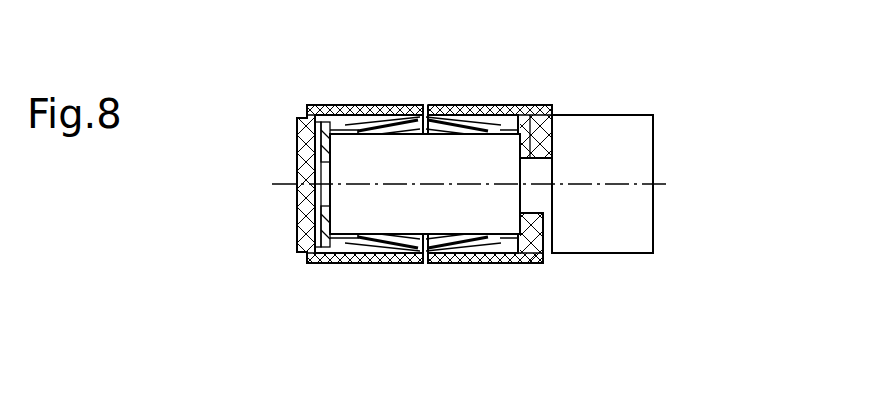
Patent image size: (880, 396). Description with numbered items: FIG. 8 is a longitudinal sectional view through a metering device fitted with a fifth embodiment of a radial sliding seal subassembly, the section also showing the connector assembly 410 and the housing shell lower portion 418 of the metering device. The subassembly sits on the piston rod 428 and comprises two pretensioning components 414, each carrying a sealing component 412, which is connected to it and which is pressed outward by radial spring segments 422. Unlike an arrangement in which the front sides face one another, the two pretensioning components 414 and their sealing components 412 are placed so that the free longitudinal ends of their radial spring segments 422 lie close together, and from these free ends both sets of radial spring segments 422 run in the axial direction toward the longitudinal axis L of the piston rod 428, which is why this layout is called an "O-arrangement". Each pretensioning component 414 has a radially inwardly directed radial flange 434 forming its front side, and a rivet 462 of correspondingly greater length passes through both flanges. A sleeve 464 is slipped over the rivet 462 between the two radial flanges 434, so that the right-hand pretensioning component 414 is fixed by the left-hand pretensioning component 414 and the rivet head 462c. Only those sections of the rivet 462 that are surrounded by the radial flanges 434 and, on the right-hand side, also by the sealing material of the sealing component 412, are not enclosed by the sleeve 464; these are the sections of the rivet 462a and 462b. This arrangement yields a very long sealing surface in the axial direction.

The connector assembly 410 is at (450, 282).
The sealing component 412 is at (305, 232).
The pretensioning component 414 is at (347, 105).
The housing shell lower portion 418 is at (440, 264).
The radial spring segments 422 is at (390, 105).
The piston rod 428 is at (643, 130).
The radial flange 434 is at (323, 217).
The rivet 462 is at (538, 170).
The section of the rivet 462a is at (538, 195).
The section of the rivet 462b is at (325, 172).
The rivet head 462c is at (318, 196).
The sleeve 464 is at (437, 173).
The longitudinal axis L is at (640, 181).